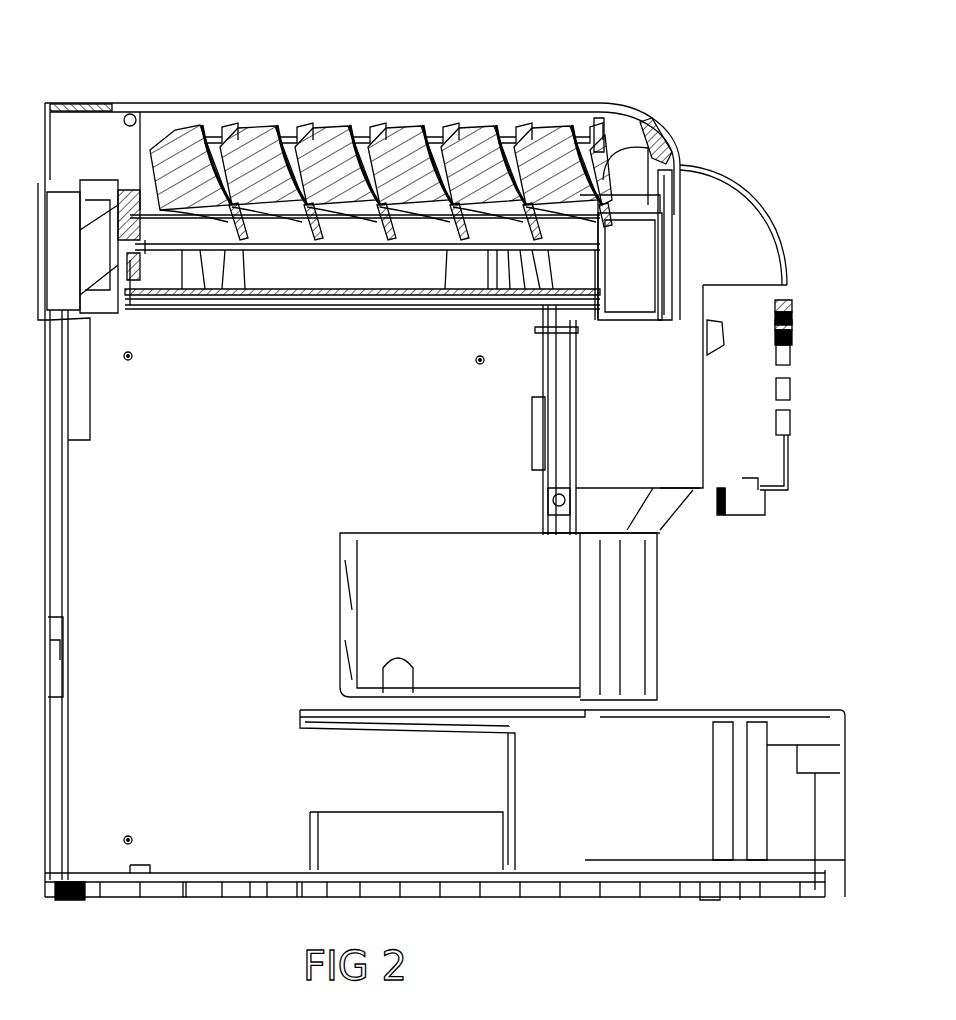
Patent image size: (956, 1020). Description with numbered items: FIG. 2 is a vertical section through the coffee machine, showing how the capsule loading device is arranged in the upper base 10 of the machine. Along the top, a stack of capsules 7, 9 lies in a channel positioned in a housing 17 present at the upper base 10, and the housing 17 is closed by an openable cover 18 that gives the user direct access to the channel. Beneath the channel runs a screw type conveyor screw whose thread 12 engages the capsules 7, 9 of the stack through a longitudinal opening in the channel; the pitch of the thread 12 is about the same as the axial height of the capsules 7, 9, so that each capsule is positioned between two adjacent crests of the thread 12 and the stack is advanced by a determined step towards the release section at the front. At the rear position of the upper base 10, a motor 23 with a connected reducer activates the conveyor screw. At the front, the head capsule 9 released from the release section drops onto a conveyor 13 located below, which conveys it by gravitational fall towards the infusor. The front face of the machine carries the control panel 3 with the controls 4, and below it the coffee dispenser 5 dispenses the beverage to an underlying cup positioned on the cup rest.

The upper base 10 is at (150, 66).
The openable cover 18 is at (248, 103).
The housing 17 is at (325, 110).
The capsule 7 is at (400, 175).
The head capsule 9 is at (550, 165).
The thread 12 is at (460, 213).
The conveyor 13 is at (631, 337).
The motor 23 is at (105, 292).
The control panel 3 is at (796, 214).
The controls 4 is at (805, 360).
The coffee dispenser 5 is at (740, 512).